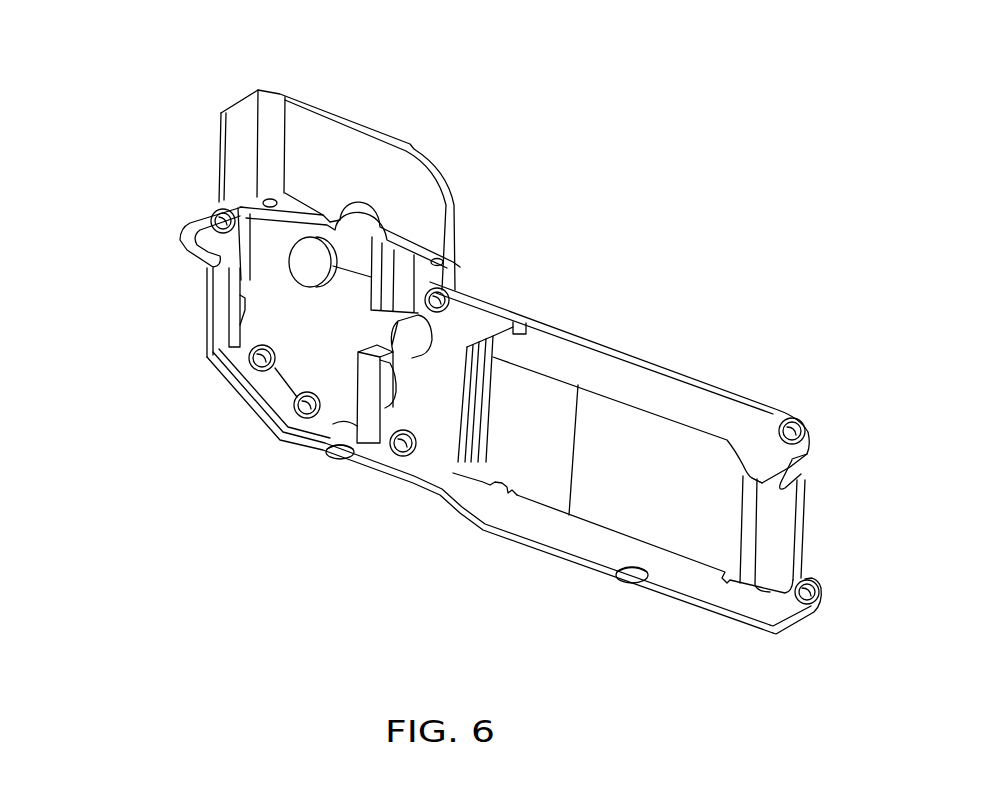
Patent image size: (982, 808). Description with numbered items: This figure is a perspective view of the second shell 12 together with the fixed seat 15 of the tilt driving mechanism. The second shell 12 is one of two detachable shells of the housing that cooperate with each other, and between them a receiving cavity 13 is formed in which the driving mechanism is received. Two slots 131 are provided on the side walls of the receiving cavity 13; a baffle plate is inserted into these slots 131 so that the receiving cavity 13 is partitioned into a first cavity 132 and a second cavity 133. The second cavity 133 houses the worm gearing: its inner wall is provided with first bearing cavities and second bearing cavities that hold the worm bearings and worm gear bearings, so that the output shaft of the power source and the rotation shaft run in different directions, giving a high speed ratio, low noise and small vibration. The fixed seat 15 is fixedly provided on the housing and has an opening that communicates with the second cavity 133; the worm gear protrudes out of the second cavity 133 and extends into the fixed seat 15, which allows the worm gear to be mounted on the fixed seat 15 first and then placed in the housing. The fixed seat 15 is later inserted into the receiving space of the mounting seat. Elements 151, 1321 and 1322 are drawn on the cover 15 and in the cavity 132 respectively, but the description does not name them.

The second shell 12 is at (687, 570).
The receiving cavity 13 is at (312, 565).
The fixed seat 15 is at (370, 180).
The slot 131 is at (510, 342).
The first cavity 132 is at (535, 415).
The second cavity 133 is at (333, 357).
The cover front face 151 is at (281, 225).
The side wall / clip 1321 is at (423, 350).
The boss 1322 is at (303, 268).